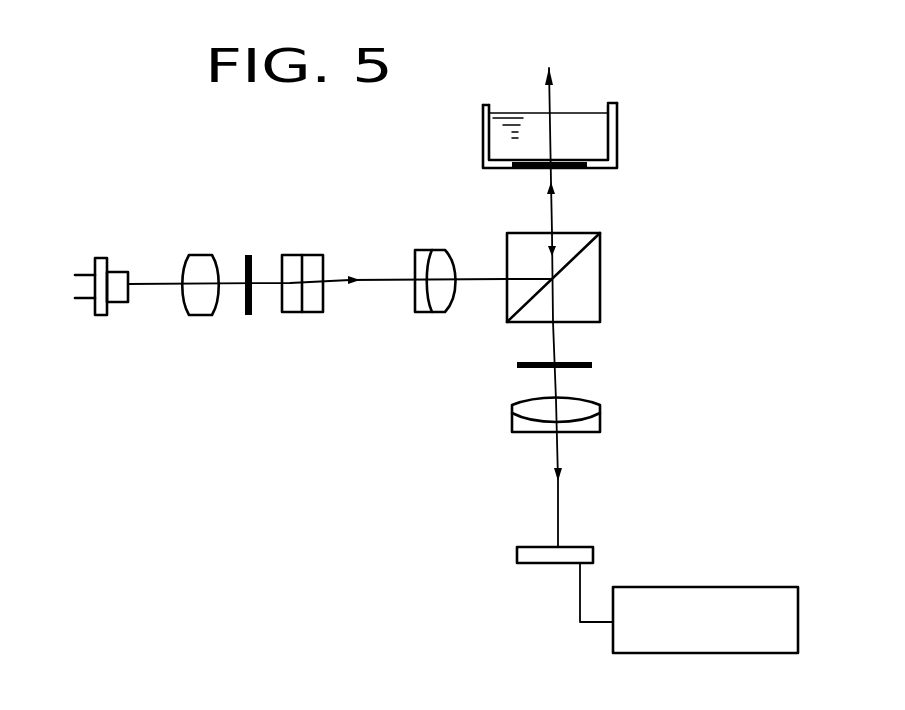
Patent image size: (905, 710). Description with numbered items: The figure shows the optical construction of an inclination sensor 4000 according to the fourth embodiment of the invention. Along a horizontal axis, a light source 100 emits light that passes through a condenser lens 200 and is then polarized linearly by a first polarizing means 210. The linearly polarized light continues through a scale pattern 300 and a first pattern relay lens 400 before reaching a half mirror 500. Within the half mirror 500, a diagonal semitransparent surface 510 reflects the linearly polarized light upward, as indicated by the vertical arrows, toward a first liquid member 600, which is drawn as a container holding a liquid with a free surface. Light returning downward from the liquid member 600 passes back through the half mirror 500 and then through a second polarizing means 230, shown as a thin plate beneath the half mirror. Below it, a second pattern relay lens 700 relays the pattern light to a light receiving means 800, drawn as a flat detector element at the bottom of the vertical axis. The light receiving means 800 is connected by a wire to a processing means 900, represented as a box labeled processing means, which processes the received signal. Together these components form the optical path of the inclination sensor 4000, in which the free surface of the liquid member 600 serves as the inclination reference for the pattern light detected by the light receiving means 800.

The light source 100 is at (119, 270).
The condenser lens 200 is at (198, 255).
The first polarizing means 210 is at (254, 312).
The scale pattern 300 is at (312, 253).
The first pattern relay lens 400 is at (425, 250).
The half mirror 500 is at (622, 252).
The semitransparent surface 510 is at (580, 230).
The first liquid member 600 is at (587, 113).
The second polarizing means 230 is at (587, 358).
The second pattern relay lens 700 is at (600, 423).
The light receiving means 800 is at (583, 545).
The processing means 900 is at (742, 590).
The inclination sensor 4000 is at (343, 440).